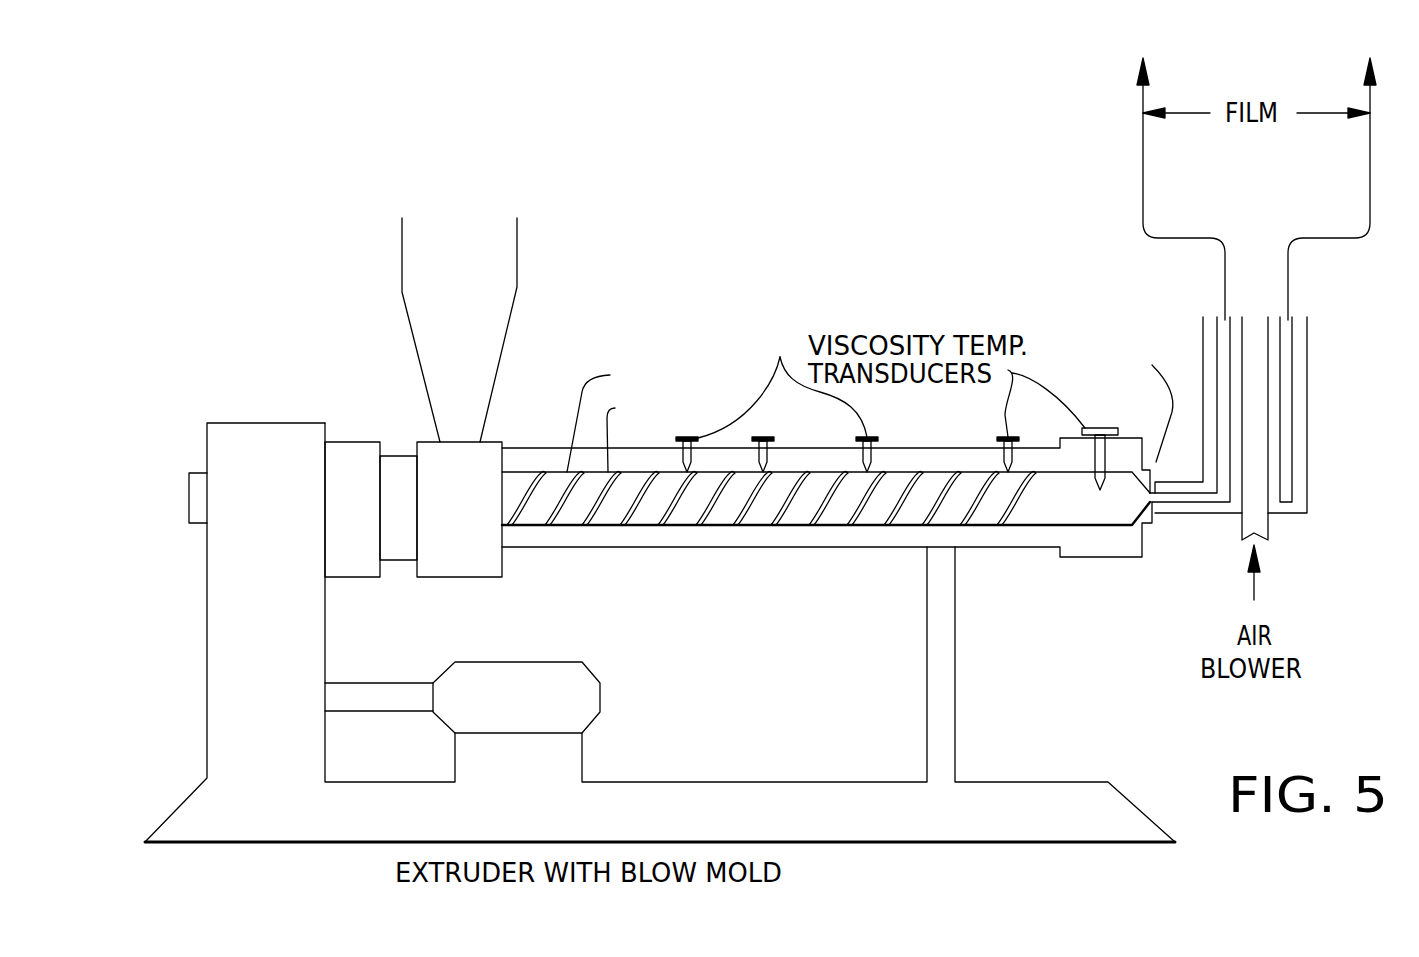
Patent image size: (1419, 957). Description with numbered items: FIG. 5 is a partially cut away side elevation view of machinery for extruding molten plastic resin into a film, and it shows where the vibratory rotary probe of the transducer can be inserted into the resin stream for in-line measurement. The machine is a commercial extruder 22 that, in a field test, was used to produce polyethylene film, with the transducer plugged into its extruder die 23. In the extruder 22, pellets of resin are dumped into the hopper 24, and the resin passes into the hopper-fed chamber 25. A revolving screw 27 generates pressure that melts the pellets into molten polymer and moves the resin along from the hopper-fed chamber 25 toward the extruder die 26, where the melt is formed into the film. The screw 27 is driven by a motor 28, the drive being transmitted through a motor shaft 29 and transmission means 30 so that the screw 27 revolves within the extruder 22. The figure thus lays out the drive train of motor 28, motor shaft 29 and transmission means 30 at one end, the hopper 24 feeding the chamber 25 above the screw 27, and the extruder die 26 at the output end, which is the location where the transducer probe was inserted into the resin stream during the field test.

The extruder 22 is at (530, 270).
The extruder die 23 is at (530, 472).
The hopper 24 is at (408, 318).
The hopper-fed chamber 25 is at (480, 566).
The extruder die 26 is at (1150, 525).
The screw 27 is at (710, 525).
The motor 28 is at (583, 707).
The motor shaft 29 is at (345, 702).
The transmission means 30 is at (350, 537).